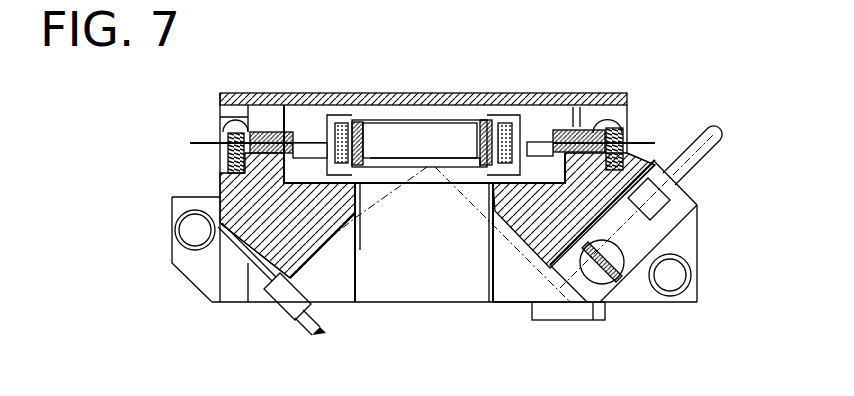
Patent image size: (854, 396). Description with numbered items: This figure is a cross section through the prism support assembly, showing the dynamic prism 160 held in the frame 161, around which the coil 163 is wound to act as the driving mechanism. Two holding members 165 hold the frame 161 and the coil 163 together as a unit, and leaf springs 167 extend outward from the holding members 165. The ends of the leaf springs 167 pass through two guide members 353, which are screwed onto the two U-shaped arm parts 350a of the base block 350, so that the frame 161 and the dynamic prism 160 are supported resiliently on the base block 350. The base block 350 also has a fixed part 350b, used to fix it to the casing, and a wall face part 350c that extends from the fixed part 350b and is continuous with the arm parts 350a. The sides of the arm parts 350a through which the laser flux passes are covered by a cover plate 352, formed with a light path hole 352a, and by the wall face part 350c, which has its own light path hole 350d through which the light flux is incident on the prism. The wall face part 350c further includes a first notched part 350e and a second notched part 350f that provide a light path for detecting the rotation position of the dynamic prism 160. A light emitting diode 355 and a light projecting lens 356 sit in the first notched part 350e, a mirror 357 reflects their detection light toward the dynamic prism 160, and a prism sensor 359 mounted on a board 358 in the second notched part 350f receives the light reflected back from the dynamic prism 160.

The dynamic prism 160 is at (431, 135).
The frame 161 is at (349, 122).
The coil 163 is at (340, 120).
The holding members 165 is at (330, 116).
The leaf springs 167 is at (262, 104).
The base block 350 is at (214, 181).
The U-shaped arm parts 350a is at (218, 160).
The fixed part 350b is at (698, 287).
The wall face part 350c is at (248, 268).
The light path hole 350d is at (368, 196).
The first notched part 350e is at (504, 300).
The second notched part 350f is at (340, 290).
The cover plate 352 is at (594, 85).
The light path hole 352a is at (392, 105).
The guide members 353 is at (220, 119).
The light emitting diode 355 is at (696, 207).
The light projecting lens 356 is at (622, 300).
The mirror 357 is at (558, 318).
The board 358 is at (320, 322).
The prism sensor 359 is at (297, 307).